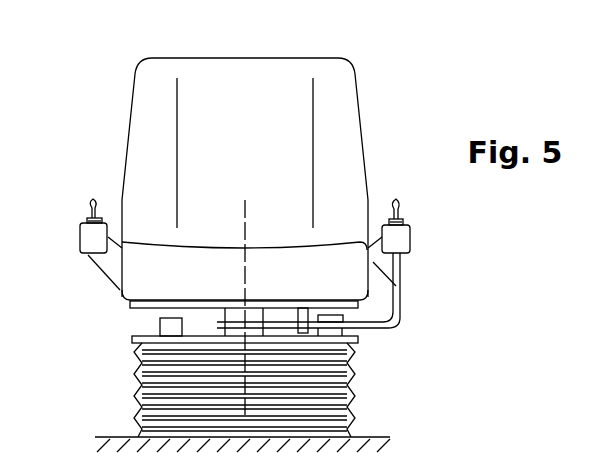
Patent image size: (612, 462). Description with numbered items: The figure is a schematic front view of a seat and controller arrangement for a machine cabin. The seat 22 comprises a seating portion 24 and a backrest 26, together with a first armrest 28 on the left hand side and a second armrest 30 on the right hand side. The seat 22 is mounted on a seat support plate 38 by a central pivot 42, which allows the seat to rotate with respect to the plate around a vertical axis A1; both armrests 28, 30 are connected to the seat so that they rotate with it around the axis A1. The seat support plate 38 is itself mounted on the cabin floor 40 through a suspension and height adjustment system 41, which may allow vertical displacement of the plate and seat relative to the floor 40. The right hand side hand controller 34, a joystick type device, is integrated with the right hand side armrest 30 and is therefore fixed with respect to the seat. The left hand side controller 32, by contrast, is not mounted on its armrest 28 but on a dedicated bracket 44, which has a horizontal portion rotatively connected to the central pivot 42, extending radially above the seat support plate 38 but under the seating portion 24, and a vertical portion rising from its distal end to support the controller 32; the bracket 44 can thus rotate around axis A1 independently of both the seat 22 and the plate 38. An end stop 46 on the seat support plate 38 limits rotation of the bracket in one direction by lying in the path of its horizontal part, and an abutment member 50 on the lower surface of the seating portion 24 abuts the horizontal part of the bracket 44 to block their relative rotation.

The seat arrangement 22 is at (85, 153).
The seating portion 24 is at (197, 243).
The backrest 26 is at (270, 96).
The first armrest 28 is at (372, 290).
The second armrest 30 is at (112, 263).
The left hand side controller 32 is at (397, 197).
The right hand side hand controller 34 is at (91, 197).
The seat support plate 38 is at (358, 340).
The cabin floor 40 is at (118, 436).
The suspension and height adjustment system 41 is at (322, 395).
The central pivot 42 is at (232, 312).
The bracket 44 is at (402, 298).
The end stop 46 is at (172, 330).
The abutment member 50 is at (304, 312).
The vertical axis A1 is at (247, 213).